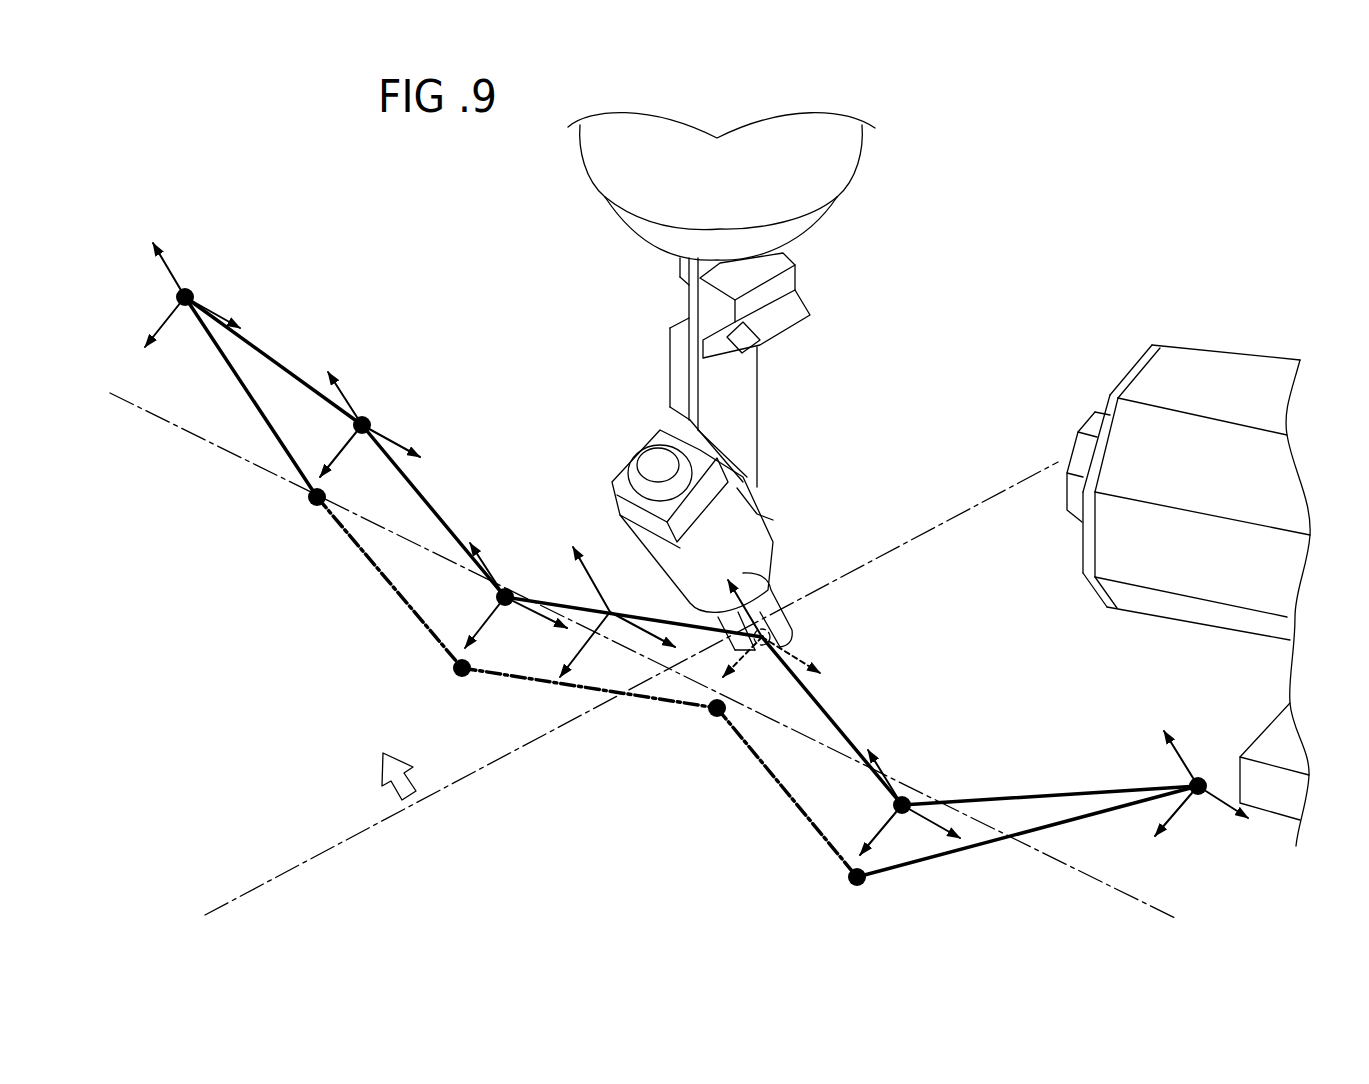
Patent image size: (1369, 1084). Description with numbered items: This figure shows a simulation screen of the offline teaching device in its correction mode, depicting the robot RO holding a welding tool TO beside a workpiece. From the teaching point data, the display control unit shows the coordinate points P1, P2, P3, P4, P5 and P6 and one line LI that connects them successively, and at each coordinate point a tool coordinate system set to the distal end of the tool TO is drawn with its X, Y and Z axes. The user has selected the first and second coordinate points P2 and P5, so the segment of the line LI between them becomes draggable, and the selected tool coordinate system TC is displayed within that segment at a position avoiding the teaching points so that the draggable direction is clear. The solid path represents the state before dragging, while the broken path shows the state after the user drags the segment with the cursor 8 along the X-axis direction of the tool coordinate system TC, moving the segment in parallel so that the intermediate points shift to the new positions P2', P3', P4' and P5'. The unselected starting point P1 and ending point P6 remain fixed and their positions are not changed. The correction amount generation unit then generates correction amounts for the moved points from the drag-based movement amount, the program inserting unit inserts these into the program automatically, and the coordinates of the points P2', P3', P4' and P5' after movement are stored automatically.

The coordinate point P1 is at (176, 298).
The coordinate point P2 is at (369, 410).
The coordinate point after movement P2' is at (278, 517).
The coordinate point P3 is at (507, 582).
The coordinate point after movement P3' is at (425, 690).
The coordinate point P4 is at (792, 615).
The coordinate point after movement P4' is at (689, 735).
The coordinate point P5 is at (903, 791).
The coordinate point after movement P5' is at (821, 896).
The coordinate point P6 is at (1201, 795).
The line LI is at (268, 352).
The robot RO is at (755, 388).
The tool TO is at (757, 520).
The tool coordinate system TC is at (569, 528).
The cursor 8 is at (375, 792).